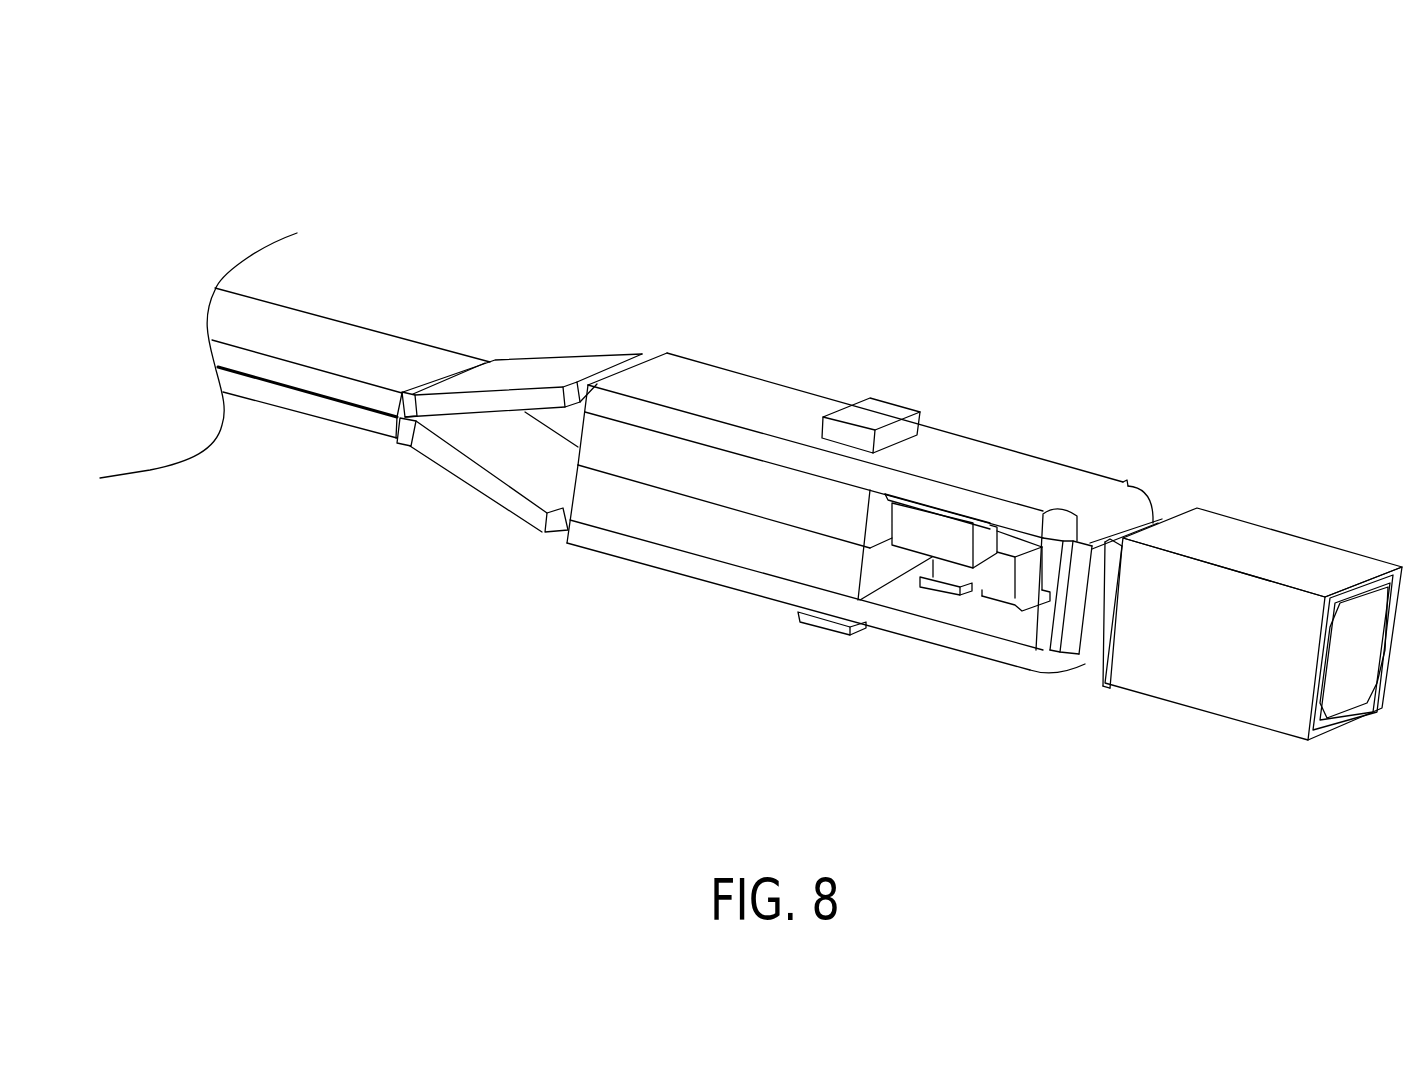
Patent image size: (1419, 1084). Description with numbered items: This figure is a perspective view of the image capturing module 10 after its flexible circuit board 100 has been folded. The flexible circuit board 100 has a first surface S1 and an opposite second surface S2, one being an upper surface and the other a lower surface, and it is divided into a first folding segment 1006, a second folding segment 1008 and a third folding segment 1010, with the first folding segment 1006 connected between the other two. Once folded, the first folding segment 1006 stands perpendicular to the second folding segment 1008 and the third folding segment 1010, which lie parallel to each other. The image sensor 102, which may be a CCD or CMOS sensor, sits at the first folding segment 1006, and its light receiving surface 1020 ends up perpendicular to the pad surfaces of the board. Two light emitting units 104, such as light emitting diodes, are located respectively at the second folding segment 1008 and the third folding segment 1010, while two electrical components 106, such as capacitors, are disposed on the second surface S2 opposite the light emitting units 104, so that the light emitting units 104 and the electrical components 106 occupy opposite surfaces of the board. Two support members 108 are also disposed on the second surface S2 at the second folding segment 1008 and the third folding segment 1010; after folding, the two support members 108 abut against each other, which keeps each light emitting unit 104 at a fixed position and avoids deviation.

The image capturing module 10 is at (300, 140).
The flexible circuit board 100 is at (348, 347).
The image sensor 102 is at (1253, 614).
The light emitting unit 104 is at (878, 413).
The electrical component 106 is at (960, 532).
The support member 108 is at (675, 458).
The first folding segment 1006 is at (1085, 598).
The second folding segment 1008 is at (758, 378).
The third folding segment 1010 is at (683, 572).
The light receiving surface 1020 is at (1353, 692).
The first surface S1 is at (977, 455).
The second surface S2 is at (935, 605).